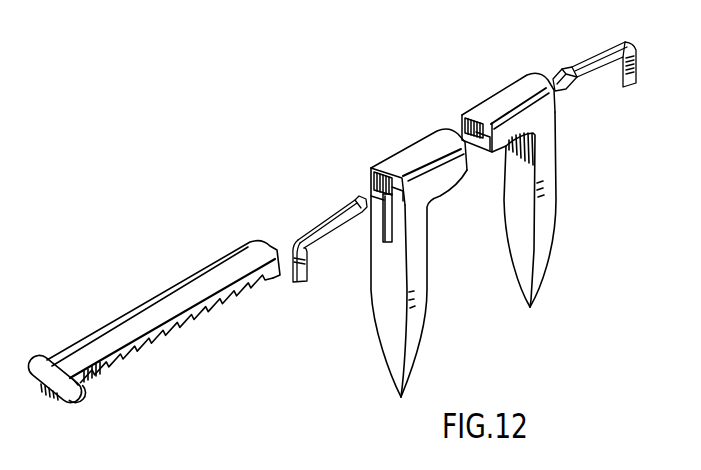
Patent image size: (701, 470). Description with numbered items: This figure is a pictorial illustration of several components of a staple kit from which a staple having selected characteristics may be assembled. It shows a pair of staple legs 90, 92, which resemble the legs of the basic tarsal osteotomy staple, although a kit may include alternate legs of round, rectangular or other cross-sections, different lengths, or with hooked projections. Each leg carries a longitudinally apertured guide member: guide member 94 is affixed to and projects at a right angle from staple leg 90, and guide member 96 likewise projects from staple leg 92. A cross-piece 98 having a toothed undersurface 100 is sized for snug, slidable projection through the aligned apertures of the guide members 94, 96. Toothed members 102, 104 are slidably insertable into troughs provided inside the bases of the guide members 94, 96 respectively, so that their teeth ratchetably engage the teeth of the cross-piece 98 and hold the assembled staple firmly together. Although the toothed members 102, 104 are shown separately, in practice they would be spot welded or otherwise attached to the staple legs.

The staple leg 90 is at (382, 293).
The staple leg 92 is at (547, 183).
The guide member 94 is at (413, 157).
The guide member 96 is at (502, 103).
The cross-piece 98 is at (133, 327).
The toothed undersurface 100 is at (217, 317).
The toothed member 102 is at (313, 235).
The toothed member 104 is at (577, 67).